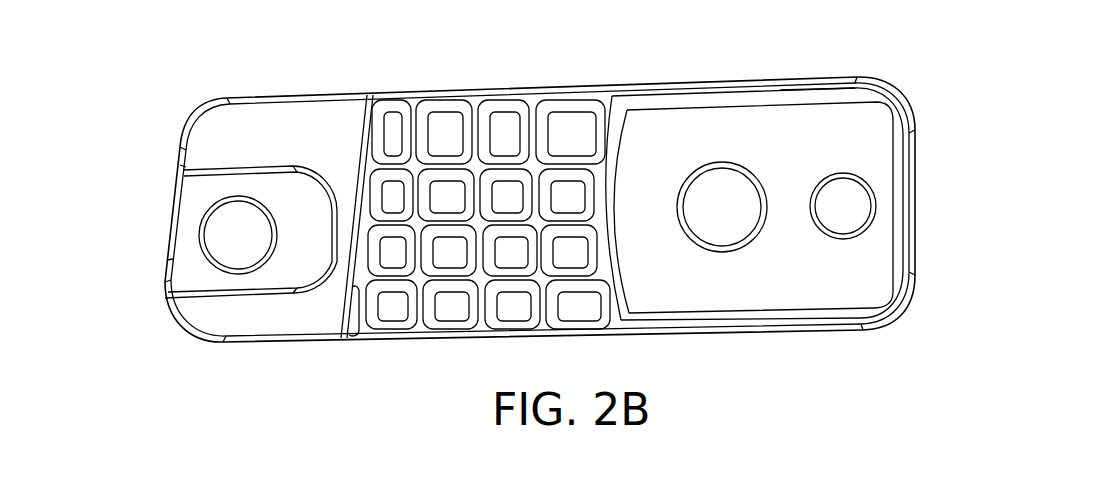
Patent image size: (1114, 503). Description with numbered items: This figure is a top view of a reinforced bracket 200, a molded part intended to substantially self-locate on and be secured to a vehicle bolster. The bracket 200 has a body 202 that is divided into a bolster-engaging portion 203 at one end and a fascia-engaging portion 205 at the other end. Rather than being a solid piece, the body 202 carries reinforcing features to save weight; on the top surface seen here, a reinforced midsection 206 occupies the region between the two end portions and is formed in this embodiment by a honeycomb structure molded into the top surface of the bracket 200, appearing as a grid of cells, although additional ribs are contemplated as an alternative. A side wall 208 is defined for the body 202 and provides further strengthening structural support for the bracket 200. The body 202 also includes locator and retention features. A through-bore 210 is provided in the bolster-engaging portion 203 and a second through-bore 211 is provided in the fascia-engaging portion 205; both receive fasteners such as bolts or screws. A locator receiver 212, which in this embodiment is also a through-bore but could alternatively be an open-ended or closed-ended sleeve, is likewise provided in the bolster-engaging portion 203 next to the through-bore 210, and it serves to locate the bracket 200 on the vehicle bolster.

The reinforced bracket 200 is at (587, 171).
The body 202 is at (605, 86).
The bolster-engaging portion 203 is at (841, 79).
The fascia-engaging portion 205 is at (272, 98).
The reinforced midsection 206 is at (505, 98).
The side wall 208 is at (767, 96).
The through-bore 210 is at (690, 178).
The through-bore 211 is at (220, 215).
The locator receiver 212 is at (817, 183).